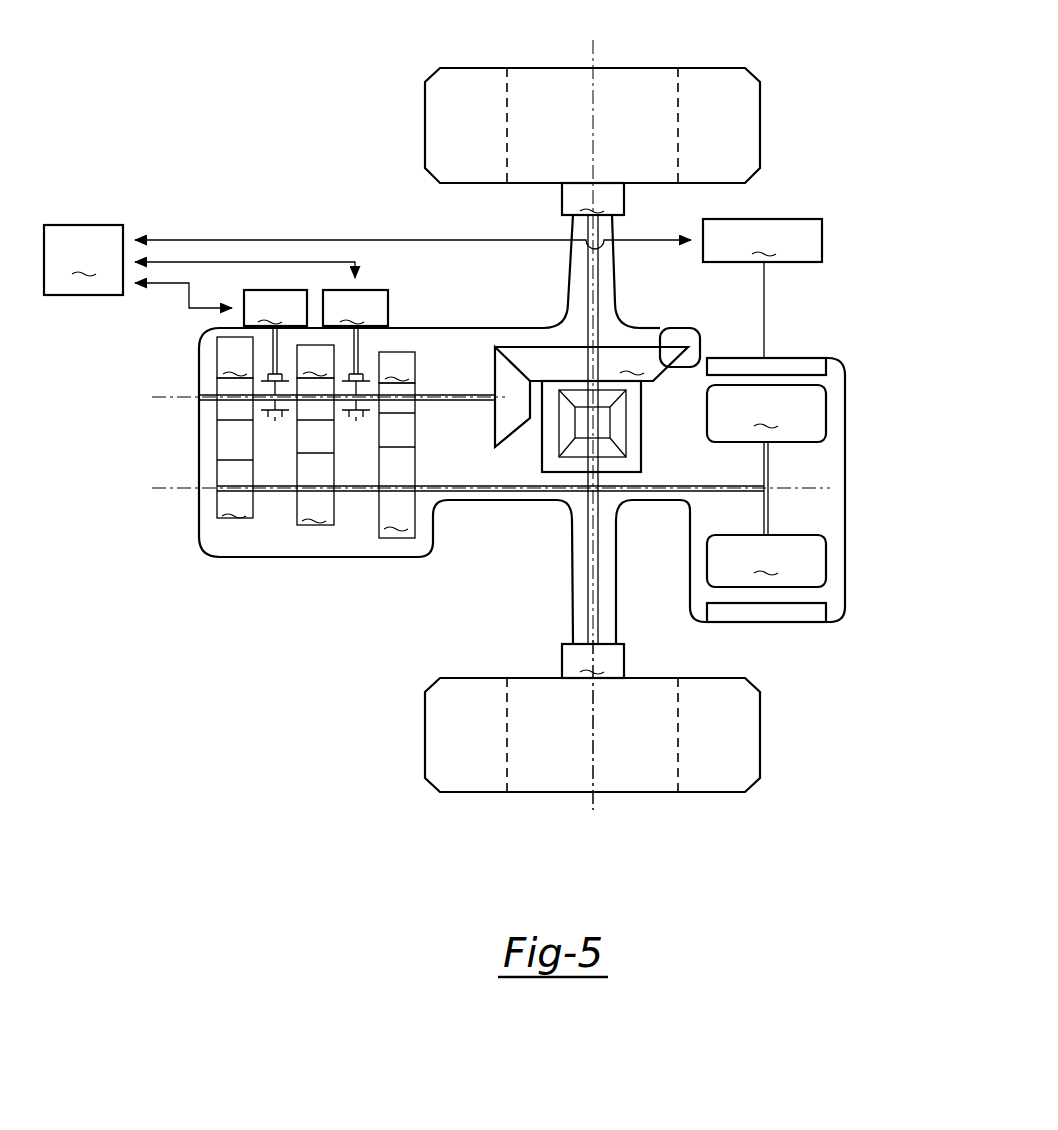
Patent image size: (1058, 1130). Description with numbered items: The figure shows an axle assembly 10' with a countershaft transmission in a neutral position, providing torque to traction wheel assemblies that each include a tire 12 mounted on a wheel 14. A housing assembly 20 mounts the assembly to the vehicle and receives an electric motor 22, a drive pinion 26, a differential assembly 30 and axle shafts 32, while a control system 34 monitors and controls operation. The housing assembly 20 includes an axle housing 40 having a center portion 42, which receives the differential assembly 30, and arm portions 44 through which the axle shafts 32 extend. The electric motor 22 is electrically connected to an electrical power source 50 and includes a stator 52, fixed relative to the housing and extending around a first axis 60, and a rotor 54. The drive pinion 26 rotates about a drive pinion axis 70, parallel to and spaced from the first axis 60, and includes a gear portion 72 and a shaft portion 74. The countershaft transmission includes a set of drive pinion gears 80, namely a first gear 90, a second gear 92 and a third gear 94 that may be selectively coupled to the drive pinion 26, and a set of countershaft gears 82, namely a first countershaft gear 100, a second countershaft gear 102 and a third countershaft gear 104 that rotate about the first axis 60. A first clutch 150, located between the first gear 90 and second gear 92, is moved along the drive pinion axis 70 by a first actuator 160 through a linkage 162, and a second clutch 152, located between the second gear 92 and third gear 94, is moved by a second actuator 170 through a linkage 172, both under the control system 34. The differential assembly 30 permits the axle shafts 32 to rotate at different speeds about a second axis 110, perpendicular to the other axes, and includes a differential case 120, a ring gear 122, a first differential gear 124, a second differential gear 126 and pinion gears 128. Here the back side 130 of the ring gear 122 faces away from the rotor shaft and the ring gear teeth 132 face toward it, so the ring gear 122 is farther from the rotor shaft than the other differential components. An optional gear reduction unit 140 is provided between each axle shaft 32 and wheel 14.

The axle assembly 10' is at (922, 361).
The tire 12 is at (760, 125).
The wheel 14 is at (647, 68).
The housing assembly 20 is at (847, 462).
The electric motor 22 is at (791, 346).
The drive pinion 26 is at (488, 418).
The differential assembly 30 is at (572, 480).
The axle shaft 32 is at (598, 283).
The control system 34 is at (367, 266).
The axle housing 40 is at (618, 548).
The center portion 42 is at (568, 520).
The arm portion 44 is at (570, 262).
The electrical power source 50 is at (762, 288).
The stator 52 is at (828, 366).
The rotor 54 is at (766, 486).
The first axis 60 is at (160, 398).
The drive pinion axis 70 is at (160, 488).
The gear portion 72 is at (505, 442).
The shaft portion 74 is at (428, 392).
The set of drive pinion gears 80 is at (208, 382).
The set of countershaft gears 82 is at (208, 468).
The first gear 90 is at (397, 366).
The second gear 92 is at (315, 361).
The third gear 94 is at (235, 357).
The first countershaft gear 100 is at (397, 460).
The second countershaft gear 102 is at (315, 451).
The third countershaft gear 104 is at (235, 448).
The second axis 110 is at (588, 800).
The differential case 120 is at (640, 442).
The ring gear 122 is at (591, 362).
The first differential gear 124 is at (577, 392).
The second differential gear 126 is at (613, 460).
The pinion gear 128 is at (623, 412).
The back side 130 is at (667, 330).
The ring gear teeth 132 is at (700, 350).
The gear reduction unit 140 is at (593, 430).
The first clutch 150 is at (356, 421).
The second clutch 152 is at (275, 421).
The first actuator 160 is at (355, 308).
The linkage 162 is at (357, 345).
The second actuator 170 is at (275, 308).
The linkage 172 is at (278, 345).